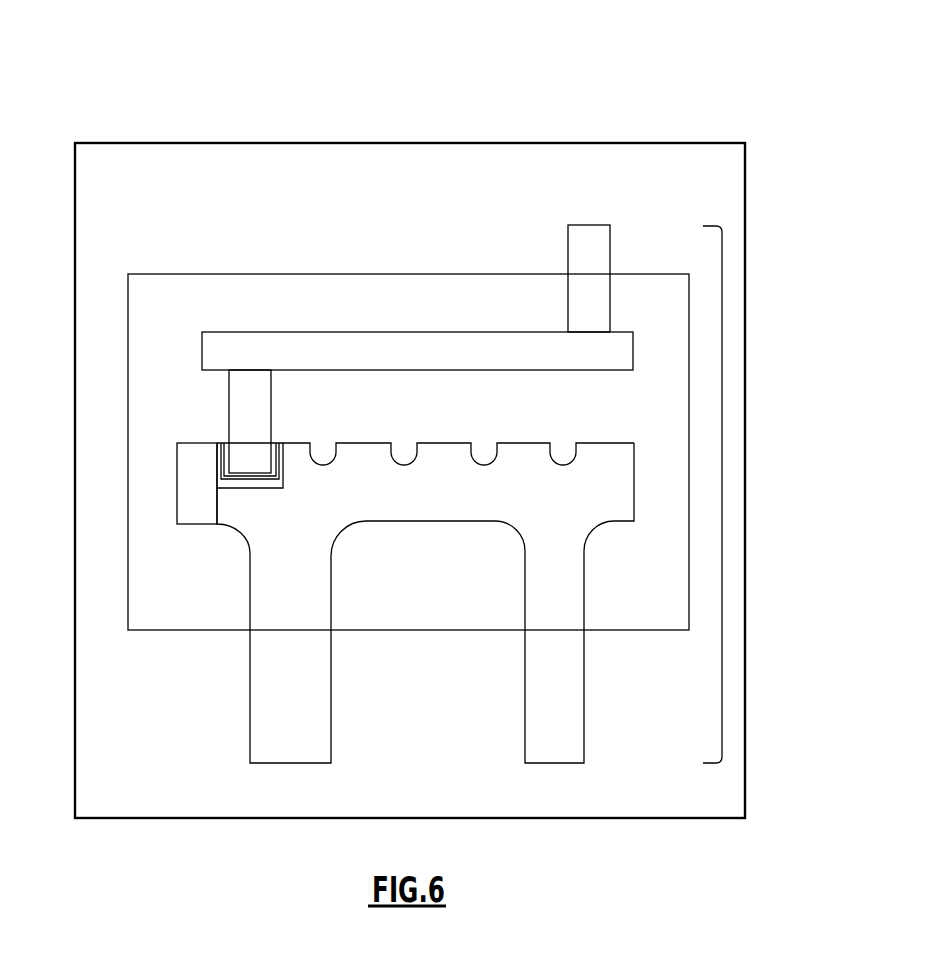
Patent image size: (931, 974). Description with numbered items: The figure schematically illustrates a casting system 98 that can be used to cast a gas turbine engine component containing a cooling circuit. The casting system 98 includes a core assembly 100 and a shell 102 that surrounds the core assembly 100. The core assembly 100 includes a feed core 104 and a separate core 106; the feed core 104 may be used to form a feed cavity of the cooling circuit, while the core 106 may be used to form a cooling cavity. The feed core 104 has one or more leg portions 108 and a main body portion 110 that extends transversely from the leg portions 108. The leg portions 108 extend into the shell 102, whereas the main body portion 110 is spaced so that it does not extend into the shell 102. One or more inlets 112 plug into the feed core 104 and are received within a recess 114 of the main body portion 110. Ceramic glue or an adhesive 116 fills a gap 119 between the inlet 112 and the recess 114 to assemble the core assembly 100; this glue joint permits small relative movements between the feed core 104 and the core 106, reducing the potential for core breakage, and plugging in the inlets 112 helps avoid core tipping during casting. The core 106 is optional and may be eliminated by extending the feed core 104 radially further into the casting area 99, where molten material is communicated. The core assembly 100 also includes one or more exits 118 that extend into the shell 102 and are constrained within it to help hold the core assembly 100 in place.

The casting system 98 is at (448, 68).
The casting area 99 is at (664, 292).
The core assembly 100 is at (722, 493).
The shell 102 is at (548, 143).
The feed core 104 is at (425, 536).
The core 106 is at (367, 340).
The leg portions 108 is at (318, 705).
The main body portion 110 is at (459, 503).
The inlets 112 is at (260, 420).
The recess 114 is at (273, 490).
The adhesive 116 is at (223, 493).
The exits 118 is at (590, 225).
The gap 119 is at (276, 478).